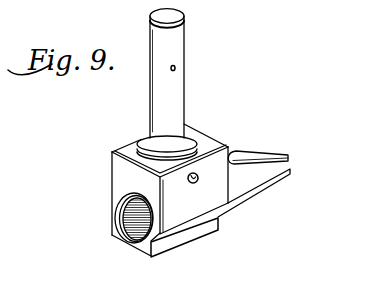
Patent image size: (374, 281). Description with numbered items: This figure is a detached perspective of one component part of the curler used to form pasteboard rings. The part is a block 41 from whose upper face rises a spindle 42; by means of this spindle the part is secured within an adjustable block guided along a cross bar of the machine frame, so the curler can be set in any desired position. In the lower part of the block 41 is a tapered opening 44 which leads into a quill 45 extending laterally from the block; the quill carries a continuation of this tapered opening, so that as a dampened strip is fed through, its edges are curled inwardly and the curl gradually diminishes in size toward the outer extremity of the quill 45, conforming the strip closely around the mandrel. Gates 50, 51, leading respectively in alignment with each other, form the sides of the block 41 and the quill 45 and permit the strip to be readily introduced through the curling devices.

The block 41 is at (112, 159).
The spindle 42 is at (184, 92).
The tapered opening 44 is at (123, 218).
The quill 45 is at (262, 147).
The gate 50 is at (178, 229).
The gate 51 is at (290, 172).